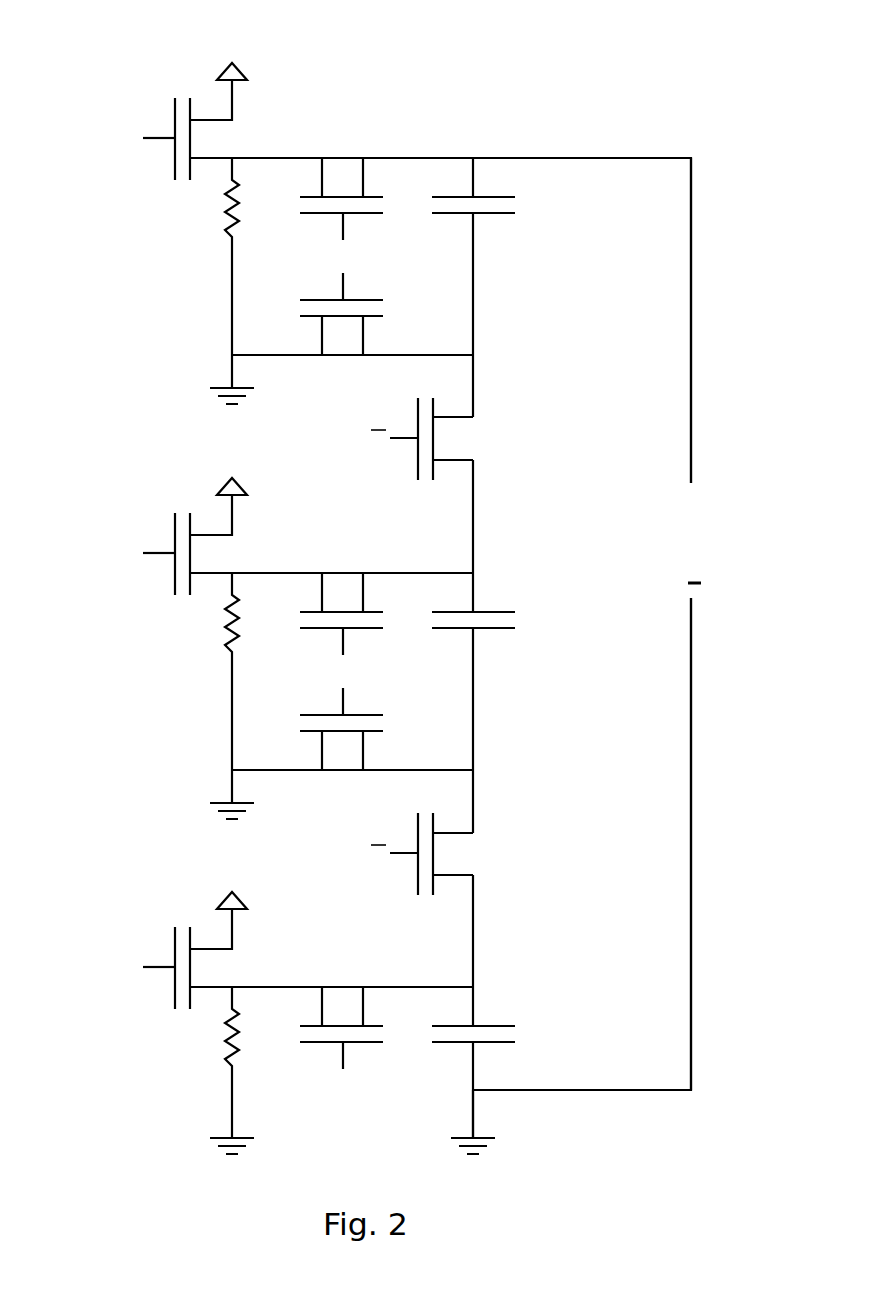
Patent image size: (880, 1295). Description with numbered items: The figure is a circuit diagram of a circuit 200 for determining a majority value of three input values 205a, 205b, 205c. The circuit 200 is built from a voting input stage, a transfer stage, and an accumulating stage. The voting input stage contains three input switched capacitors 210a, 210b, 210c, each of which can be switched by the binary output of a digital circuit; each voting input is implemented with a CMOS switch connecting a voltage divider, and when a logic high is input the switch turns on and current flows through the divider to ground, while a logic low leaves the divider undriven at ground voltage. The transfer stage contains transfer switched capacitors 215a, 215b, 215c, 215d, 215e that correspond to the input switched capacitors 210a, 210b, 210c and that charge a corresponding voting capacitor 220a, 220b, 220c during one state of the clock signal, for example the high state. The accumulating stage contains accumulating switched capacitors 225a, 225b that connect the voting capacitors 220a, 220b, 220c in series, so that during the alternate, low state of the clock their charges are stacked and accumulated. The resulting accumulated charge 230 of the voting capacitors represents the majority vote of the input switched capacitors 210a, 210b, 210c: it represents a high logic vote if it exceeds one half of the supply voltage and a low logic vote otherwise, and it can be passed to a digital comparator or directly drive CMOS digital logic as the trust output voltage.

The circuit 200 is at (630, 116).
The input value 205a is at (125, 150).
The input value 205b is at (125, 563).
The input value 205c is at (125, 975).
The input switched capacitor 210a is at (183, 98).
The input switched capacitor 210b is at (183, 513).
The input switched capacitor 210c is at (183, 927).
The transfer switched capacitor 215a is at (351, 197).
The transfer switched capacitor 215b is at (331, 318).
The transfer switched capacitor 215c is at (351, 612).
The transfer switched capacitor 215d is at (331, 733).
The transfer switched capacitor 215e is at (351, 1026).
The voting capacitor 220a is at (508, 206).
The voting capacitor 220b is at (508, 621).
The voting capacitor 220c is at (508, 1035).
The accumulating switched capacitor 225a is at (434, 438).
The accumulating switched capacitor 225b is at (434, 853).
The accumulated charge 230 is at (683, 624).